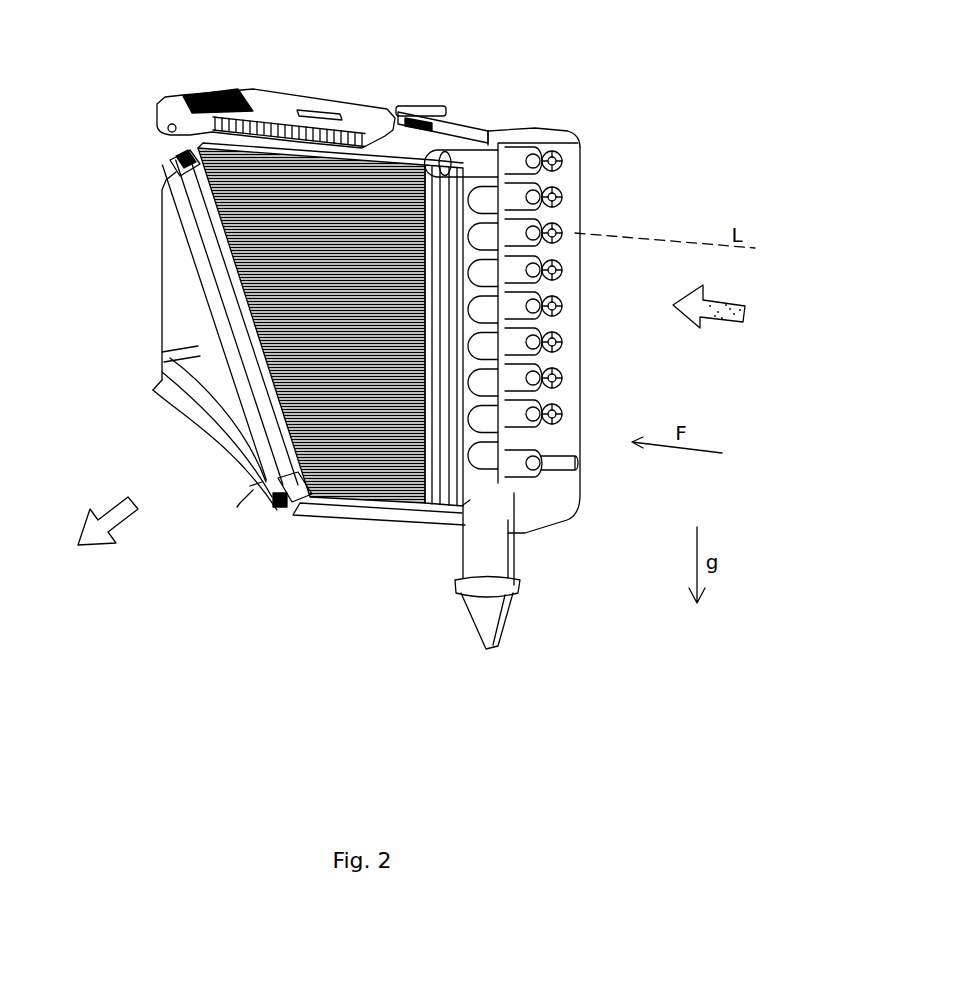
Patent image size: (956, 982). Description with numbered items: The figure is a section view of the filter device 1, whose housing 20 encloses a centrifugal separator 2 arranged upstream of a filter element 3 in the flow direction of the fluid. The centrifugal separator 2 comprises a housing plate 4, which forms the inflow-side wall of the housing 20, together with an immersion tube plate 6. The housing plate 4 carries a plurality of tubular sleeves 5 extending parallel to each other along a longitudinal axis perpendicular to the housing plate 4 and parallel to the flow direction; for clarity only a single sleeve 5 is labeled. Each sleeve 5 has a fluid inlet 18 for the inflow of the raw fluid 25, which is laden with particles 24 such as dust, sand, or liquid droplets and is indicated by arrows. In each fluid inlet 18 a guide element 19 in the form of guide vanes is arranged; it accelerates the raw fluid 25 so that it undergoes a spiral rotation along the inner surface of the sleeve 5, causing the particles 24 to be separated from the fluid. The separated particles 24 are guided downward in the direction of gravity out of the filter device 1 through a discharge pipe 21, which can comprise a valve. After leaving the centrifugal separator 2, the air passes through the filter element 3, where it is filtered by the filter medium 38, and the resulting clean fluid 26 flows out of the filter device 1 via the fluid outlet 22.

The filter device 1 is at (600, 113).
The centrifugal separator 2 is at (520, 128).
The filter element 3 is at (262, 150).
The housing plate 4 is at (565, 320).
The tubular sleeve 5 is at (484, 453).
The immersion tube plate 6 is at (478, 490).
The fluid inlet 18 is at (558, 294).
The guide element 19 is at (558, 388).
The housing 20 is at (428, 108).
The discharge pipe 21 is at (487, 615).
The fluid outlet 22 is at (232, 426).
The particles 24 is at (743, 313).
The raw fluid 25 is at (733, 320).
The clean fluid 26 is at (102, 508).
The filter medium 38 is at (232, 228).